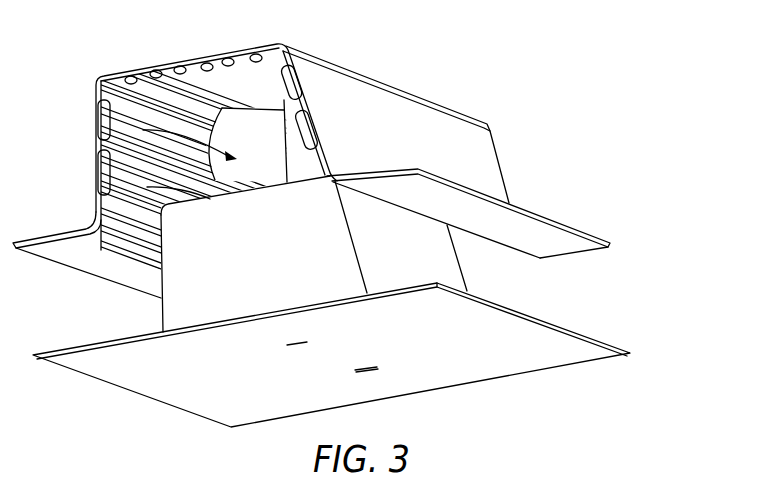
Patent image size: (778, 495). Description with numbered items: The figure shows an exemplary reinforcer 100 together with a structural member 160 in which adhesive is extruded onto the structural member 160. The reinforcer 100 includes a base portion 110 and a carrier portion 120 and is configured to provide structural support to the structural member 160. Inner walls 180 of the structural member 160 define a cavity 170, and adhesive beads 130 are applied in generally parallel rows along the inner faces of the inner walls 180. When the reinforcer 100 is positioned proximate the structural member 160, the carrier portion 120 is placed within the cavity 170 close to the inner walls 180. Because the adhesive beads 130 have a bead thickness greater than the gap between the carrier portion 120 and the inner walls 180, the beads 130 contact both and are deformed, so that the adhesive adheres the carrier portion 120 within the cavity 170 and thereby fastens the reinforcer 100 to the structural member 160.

The reinforcer 100 is at (650, 336).
The base portion 110 is at (533, 357).
The carrier portion 120 is at (182, 308).
The adhesive beads 130 is at (222, 108).
The structural member 160 is at (485, 167).
The cavity 170 is at (287, 230).
The inner walls 180 is at (205, 78).